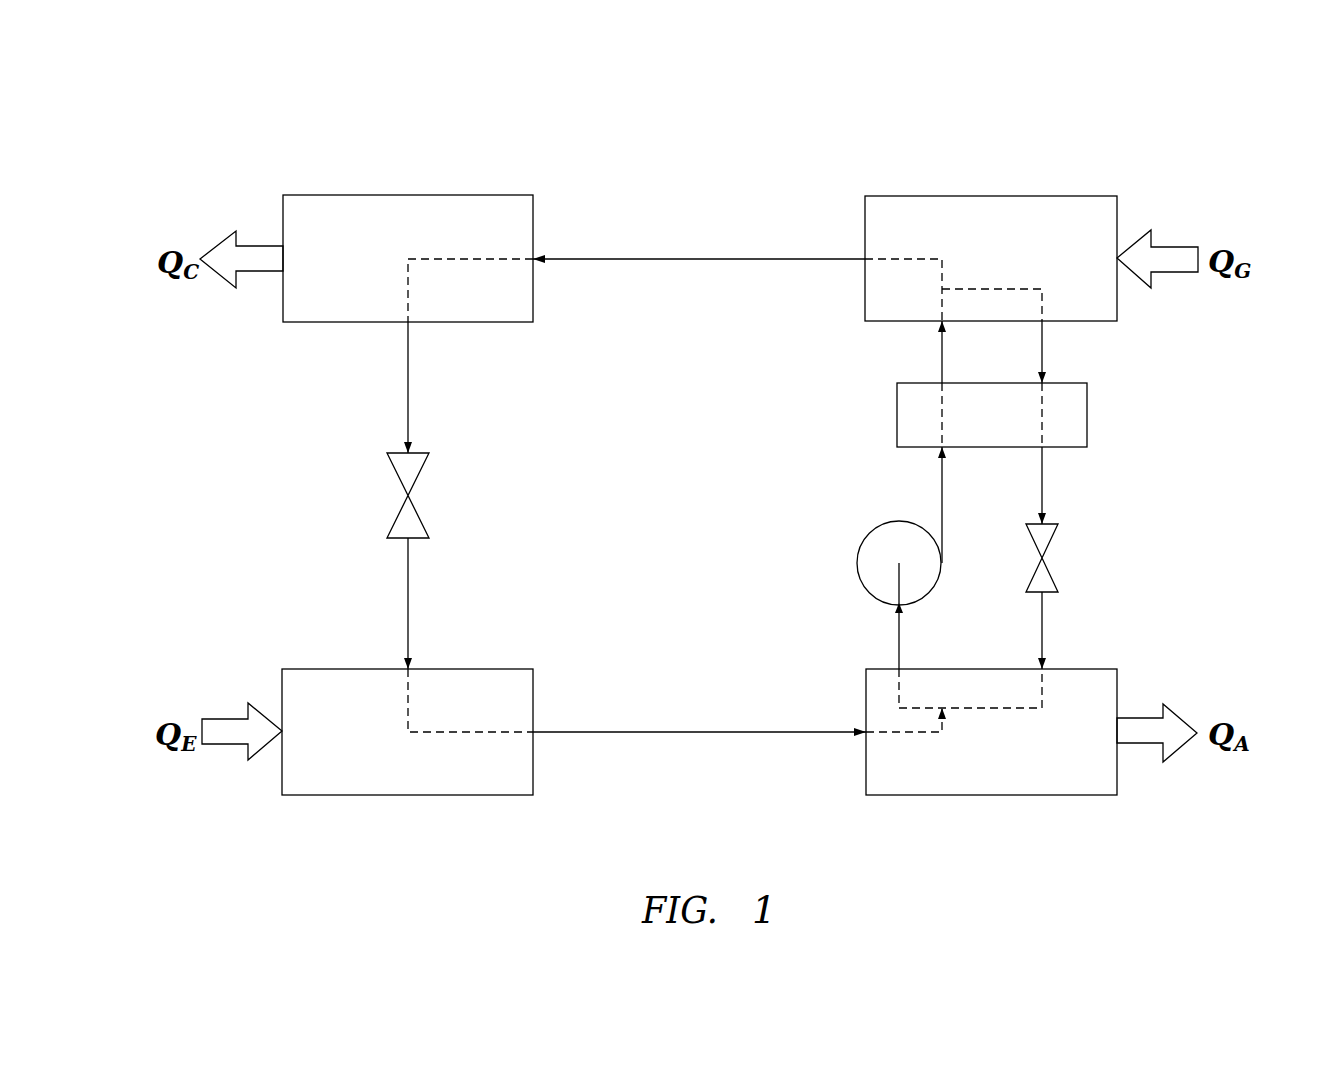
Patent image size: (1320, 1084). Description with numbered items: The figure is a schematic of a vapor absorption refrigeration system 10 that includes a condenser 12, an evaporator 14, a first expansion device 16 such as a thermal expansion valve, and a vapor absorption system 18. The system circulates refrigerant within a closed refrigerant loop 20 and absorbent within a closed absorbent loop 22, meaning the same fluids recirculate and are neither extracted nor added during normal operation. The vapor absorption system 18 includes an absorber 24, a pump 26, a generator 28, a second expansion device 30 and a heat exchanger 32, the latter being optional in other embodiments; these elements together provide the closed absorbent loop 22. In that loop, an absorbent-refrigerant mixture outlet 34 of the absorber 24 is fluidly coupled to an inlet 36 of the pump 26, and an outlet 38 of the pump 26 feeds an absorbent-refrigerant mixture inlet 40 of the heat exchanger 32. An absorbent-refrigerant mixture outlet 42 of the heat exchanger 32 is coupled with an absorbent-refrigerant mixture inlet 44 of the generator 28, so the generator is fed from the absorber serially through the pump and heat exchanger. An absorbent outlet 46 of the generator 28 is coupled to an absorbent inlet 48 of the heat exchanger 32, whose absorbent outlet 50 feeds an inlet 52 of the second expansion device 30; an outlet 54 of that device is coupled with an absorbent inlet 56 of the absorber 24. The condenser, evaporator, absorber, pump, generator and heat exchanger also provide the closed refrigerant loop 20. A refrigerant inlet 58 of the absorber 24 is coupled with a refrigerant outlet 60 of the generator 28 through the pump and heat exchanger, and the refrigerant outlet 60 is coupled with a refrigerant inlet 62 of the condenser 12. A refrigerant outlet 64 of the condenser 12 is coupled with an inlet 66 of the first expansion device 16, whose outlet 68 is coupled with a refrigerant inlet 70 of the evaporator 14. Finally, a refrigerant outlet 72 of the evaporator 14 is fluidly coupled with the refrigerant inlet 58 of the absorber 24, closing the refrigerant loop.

The vapor absorption refrigeration system 10 is at (236, 146).
The condenser 12 is at (443, 195).
The evaporator 14 is at (320, 796).
The first expansion device 16 is at (400, 510).
The vapor absorption system 18 is at (1115, 162).
The closed refrigerant loop 20 is at (622, 212).
The closed absorbent loop 22 is at (862, 495).
The absorber 24 is at (905, 796).
The pump 26 is at (857, 563).
The generator 28 is at (930, 196).
The second expansion device 30 is at (1050, 545).
The heat exchanger 32 is at (1024, 415).
The absorbent-refrigerant mixture outlet 34 is at (897, 666).
The inlet 36 is at (905, 605).
The outlet 38 is at (945, 563).
The absorbent-refrigerant mixture inlet 40 is at (938, 450).
The absorbent-refrigerant mixture outlet 42 is at (938, 383).
The absorbent-refrigerant mixture inlet 44 is at (938, 332).
The absorbent outlet 46 is at (1044, 323).
The absorbent inlet 48 is at (1046, 383).
The absorbent outlet 50 is at (1046, 450).
The inlet 52 is at (1050, 523).
The outlet 54 is at (1045, 595).
The absorbent inlet 56 is at (1048, 665).
The refrigerant inlet 58 is at (862, 735).
The refrigerant outlet 60 is at (865, 268).
The refrigerant inlet 62 is at (535, 263).
The refrigerant outlet 64 is at (410, 323).
The inlet 66 is at (404, 450).
The outlet 68 is at (412, 540).
The refrigerant inlet 70 is at (412, 666).
The refrigerant outlet 72 is at (535, 735).